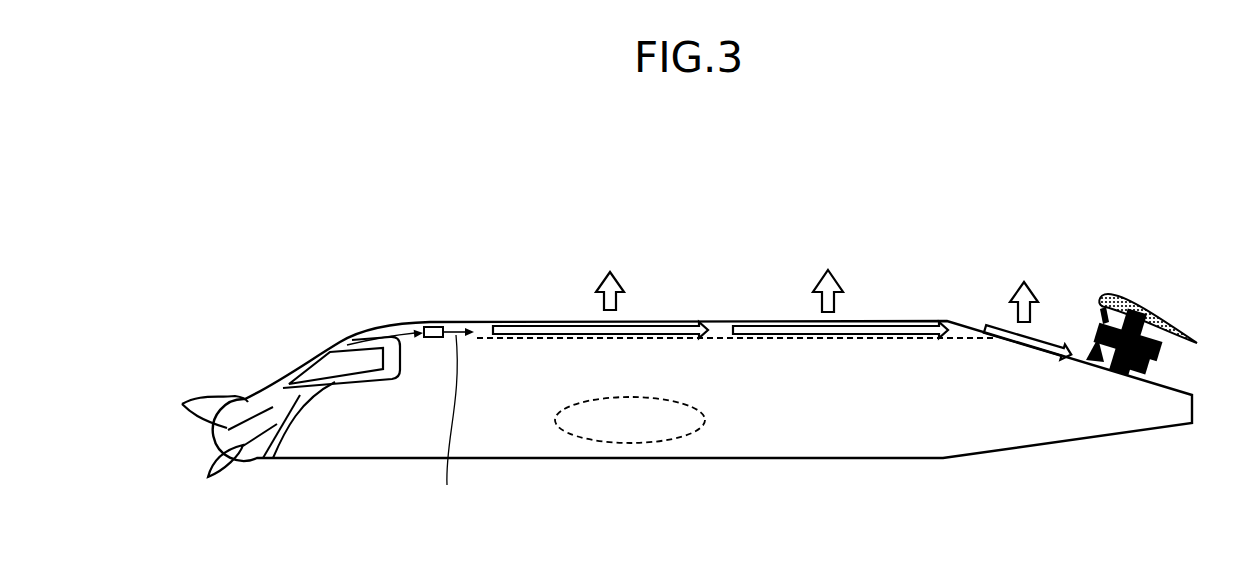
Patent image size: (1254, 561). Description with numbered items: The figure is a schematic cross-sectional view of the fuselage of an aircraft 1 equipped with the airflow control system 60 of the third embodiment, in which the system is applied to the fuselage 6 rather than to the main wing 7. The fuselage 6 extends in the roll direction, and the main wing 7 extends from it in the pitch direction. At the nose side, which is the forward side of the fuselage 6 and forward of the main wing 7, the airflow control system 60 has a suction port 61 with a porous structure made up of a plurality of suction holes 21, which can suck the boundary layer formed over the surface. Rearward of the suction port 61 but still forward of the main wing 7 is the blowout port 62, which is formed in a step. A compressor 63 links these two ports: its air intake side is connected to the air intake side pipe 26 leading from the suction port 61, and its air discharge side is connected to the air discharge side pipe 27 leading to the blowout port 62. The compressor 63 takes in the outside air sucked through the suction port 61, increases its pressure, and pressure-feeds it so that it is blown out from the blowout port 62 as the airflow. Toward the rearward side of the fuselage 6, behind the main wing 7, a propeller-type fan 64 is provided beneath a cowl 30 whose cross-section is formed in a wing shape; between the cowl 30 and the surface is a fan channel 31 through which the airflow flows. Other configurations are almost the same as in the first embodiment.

The aircraft 1 is at (912, 196).
The fuselage 6 is at (410, 282).
The main wing 7 is at (638, 445).
The suction holes 21 is at (199, 412).
The air intake side pipe 26 is at (214, 476).
The air discharge side pipe 27 is at (447, 420).
The cowl 30 is at (1155, 313).
The fan channel 31 is at (1175, 360).
The airflow control system 60 is at (1169, 335).
The suction port 61 is at (165, 448).
The blowout port 62 is at (477, 333).
The compressor 63 is at (432, 327).
The fan 64 is at (1152, 368).